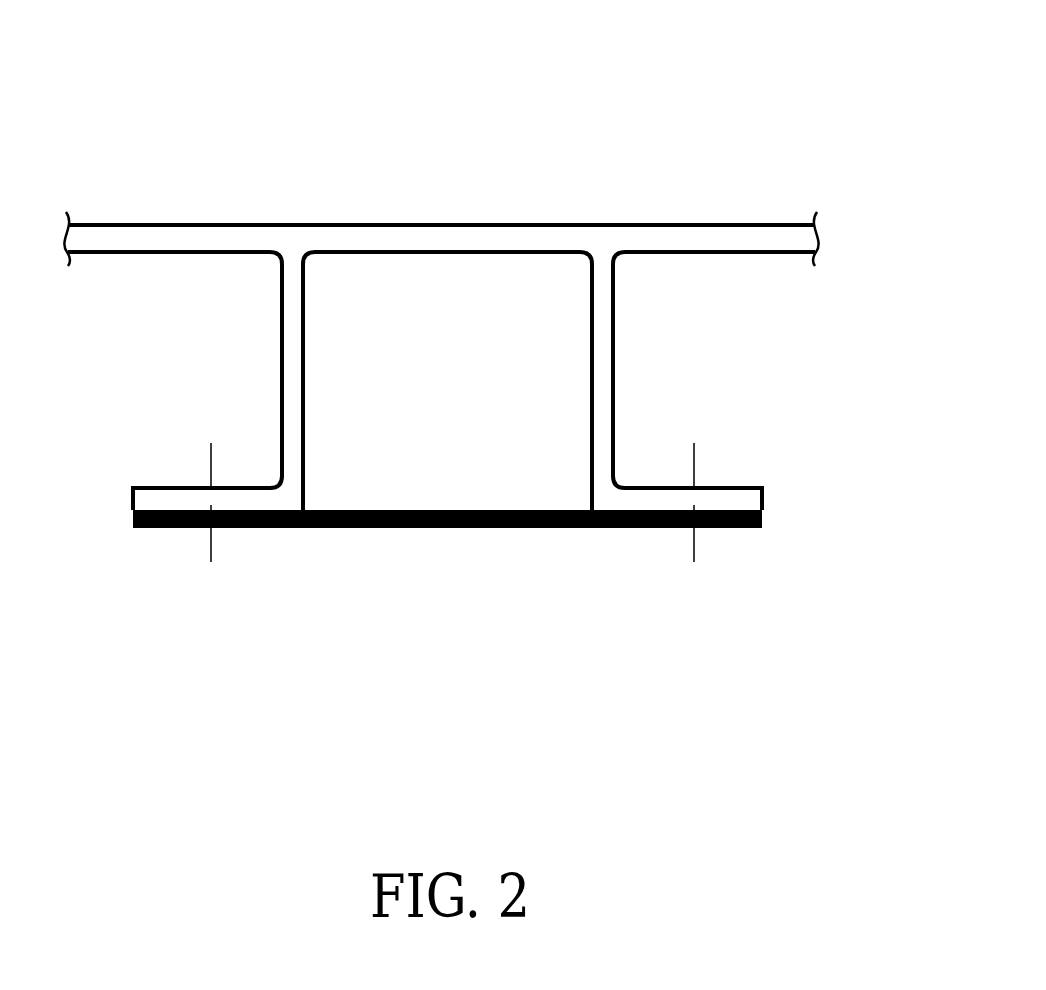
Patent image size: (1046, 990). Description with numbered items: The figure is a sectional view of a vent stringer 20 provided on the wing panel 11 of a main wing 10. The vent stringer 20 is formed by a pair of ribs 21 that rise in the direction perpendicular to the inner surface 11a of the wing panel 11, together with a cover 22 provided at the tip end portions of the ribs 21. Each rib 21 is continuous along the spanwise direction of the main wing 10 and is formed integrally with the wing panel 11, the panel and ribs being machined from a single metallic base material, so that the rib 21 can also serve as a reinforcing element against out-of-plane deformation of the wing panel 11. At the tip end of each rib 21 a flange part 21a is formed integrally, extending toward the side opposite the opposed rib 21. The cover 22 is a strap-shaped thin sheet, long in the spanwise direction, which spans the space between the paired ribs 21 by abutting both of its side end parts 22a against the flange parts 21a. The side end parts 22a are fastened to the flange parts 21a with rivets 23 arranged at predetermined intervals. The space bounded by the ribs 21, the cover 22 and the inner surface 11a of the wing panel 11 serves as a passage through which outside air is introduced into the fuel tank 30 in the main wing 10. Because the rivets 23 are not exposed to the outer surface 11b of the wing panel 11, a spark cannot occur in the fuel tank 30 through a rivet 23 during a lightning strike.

The main wing 10 is at (456, 204).
The wing panel 11 is at (456, 221).
The inner surface 11a is at (757, 252).
The outer surface 11b is at (515, 225).
The vent stringer 20 is at (465, 487).
The rib 21 is at (282, 316).
The flange part 21a is at (175, 488).
The cover 22 is at (510, 528).
The side end part 22a is at (152, 528).
The rivet 23 is at (196, 590).
The fuel tank 30 is at (425, 693).